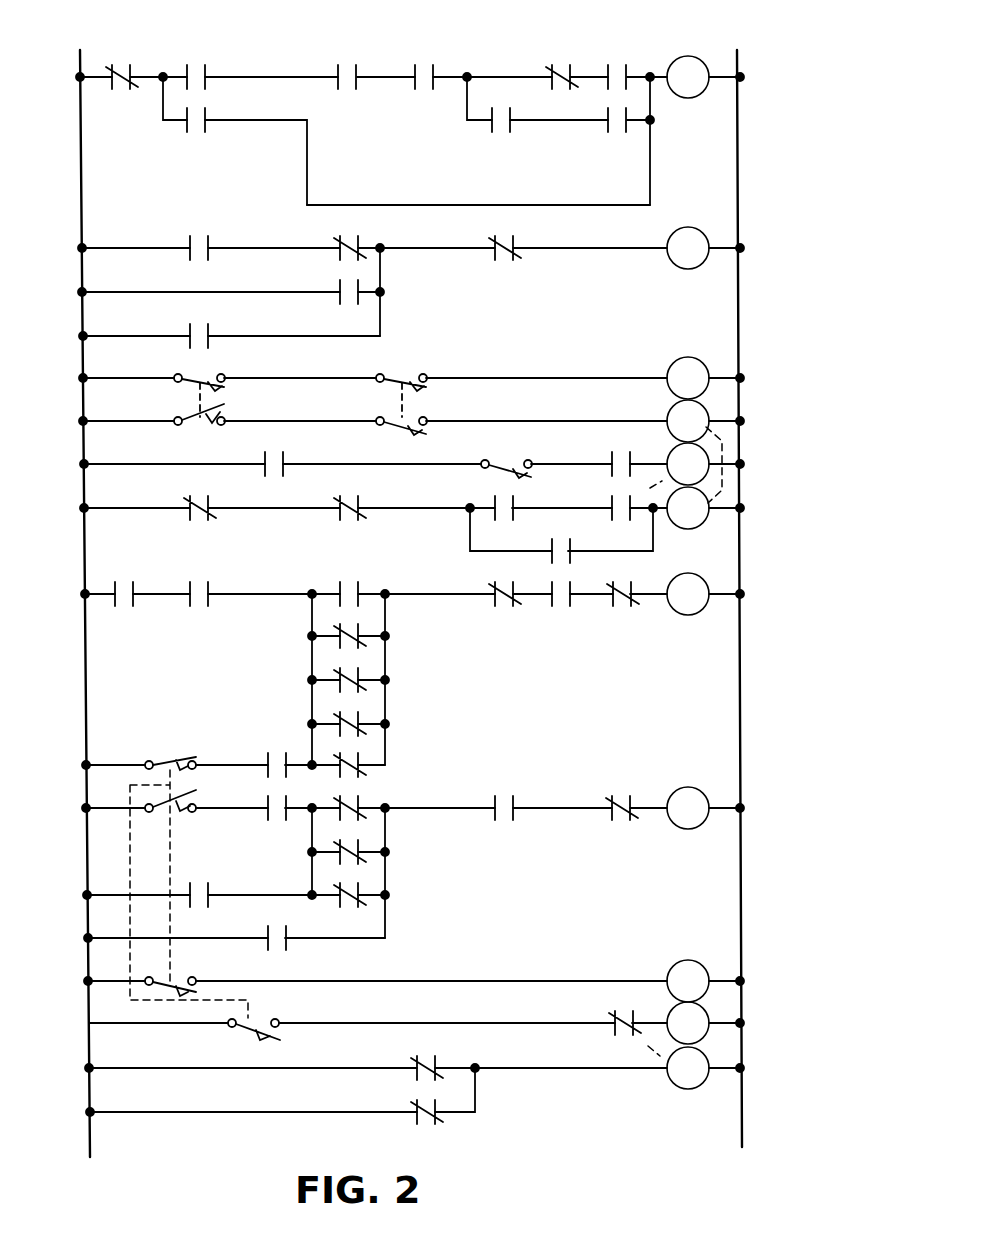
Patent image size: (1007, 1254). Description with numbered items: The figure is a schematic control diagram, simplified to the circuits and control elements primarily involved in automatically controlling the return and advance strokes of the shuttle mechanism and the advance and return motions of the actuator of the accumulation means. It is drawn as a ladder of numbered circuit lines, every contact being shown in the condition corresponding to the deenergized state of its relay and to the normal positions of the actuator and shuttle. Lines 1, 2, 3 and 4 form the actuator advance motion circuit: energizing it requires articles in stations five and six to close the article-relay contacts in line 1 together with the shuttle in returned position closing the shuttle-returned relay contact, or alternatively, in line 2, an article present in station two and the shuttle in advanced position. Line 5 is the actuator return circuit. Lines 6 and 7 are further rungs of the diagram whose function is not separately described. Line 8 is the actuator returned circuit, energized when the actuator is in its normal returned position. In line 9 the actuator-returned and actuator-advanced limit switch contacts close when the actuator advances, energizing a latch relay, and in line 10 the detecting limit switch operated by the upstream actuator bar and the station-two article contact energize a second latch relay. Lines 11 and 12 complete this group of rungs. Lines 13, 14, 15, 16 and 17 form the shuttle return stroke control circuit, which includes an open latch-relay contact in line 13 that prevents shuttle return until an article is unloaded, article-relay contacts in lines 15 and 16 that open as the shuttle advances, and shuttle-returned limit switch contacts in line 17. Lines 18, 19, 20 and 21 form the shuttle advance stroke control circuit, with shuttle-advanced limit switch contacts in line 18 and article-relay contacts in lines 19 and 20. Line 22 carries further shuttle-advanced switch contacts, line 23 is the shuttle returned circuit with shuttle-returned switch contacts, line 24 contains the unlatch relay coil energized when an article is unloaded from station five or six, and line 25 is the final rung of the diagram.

The actuator advance motion circuit line 1 is at (451, 71).
The actuator advance motion circuit alternative branch line 2 is at (351, 141).
The actuator advance motion circuit line 3 is at (178, 162).
The actuator advance motion circuit line 4 is at (349, 205).
The actuator return circuit line 5 is at (451, 242).
The rung 6 - 7CR holding contact 6 is at (216, 292).
The rung 7 - 6CR holding contact 7 is at (214, 326).
The actuator returned circuit line 8 is at (452, 381).
The latch relay 8CRL circuit line 9 is at (445, 451).
The latch relay 9CRL circuit line 10 is at (443, 463).
The rung 11 - actuator memory release (8CR U) circuit 11 is at (444, 514).
The rung 12 - 10CR parallel contact 12 is at (347, 535).
The shuttle return stroke control circuit line 13 is at (439, 592).
The shuttle return stroke control circuit line 14 is at (215, 679).
The shuttle return stroke control circuit line 15 is at (215, 670).
The shuttle return stroke control circuit line 16 is at (215, 714).
The shuttle return stroke control circuit line 17 is at (213, 875).
The shuttle advance stroke control circuit line 18 is at (441, 805).
The shuttle advance stroke control circuit line 19 is at (215, 873).
The shuttle advance stroke control circuit line 20 is at (215, 885).
The shuttle advance stroke control circuit line 21 is at (213, 928).
The LS-4 shuttle advanced circuit line 22 is at (448, 979).
The shuttle returned circuit line 23 is at (448, 1021).
The unlatch relay coil 9CRU circuit line 24 is at (445, 1079).
The rung 25 - CRP6 parallel contact 25 is at (258, 1096).